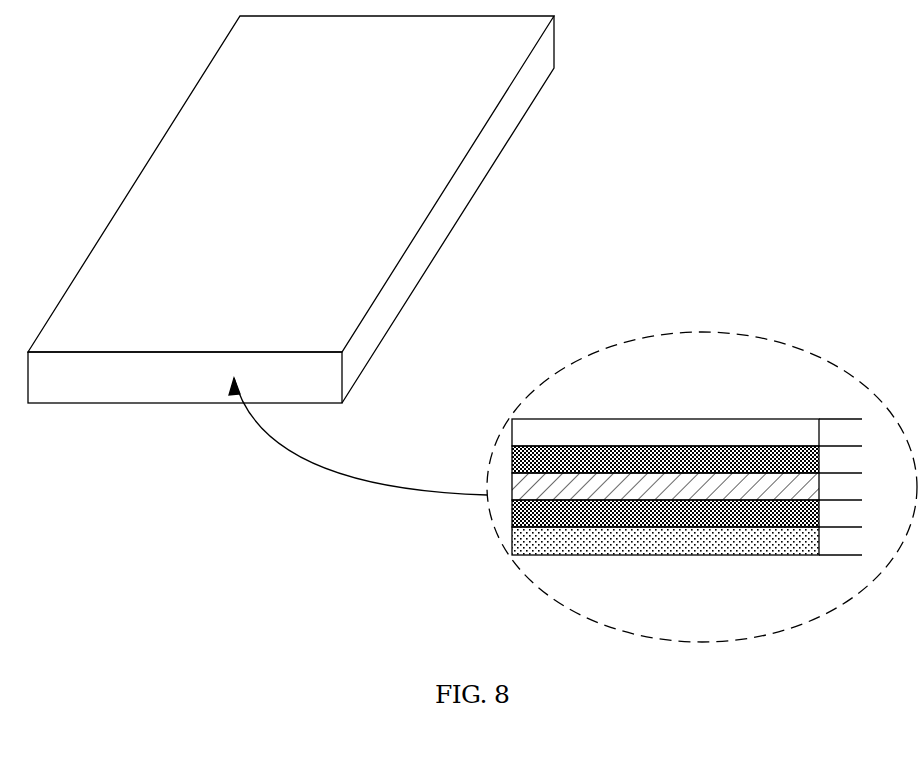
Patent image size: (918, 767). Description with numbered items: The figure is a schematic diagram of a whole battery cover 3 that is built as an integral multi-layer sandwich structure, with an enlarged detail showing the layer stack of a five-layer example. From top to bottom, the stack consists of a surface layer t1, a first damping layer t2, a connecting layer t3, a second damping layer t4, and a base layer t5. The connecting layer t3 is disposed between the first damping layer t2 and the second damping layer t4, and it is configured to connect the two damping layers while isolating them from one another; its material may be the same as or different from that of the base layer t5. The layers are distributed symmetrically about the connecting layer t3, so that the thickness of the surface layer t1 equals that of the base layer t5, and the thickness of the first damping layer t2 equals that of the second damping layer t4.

The battery cover 3 is at (521, 120).
The surface layer t1 is at (830, 446).
The first damping layer t2 is at (830, 473).
The connecting layer t3 is at (830, 500).
The second damping layer t4 is at (830, 527).
The base layer t5 is at (830, 555).